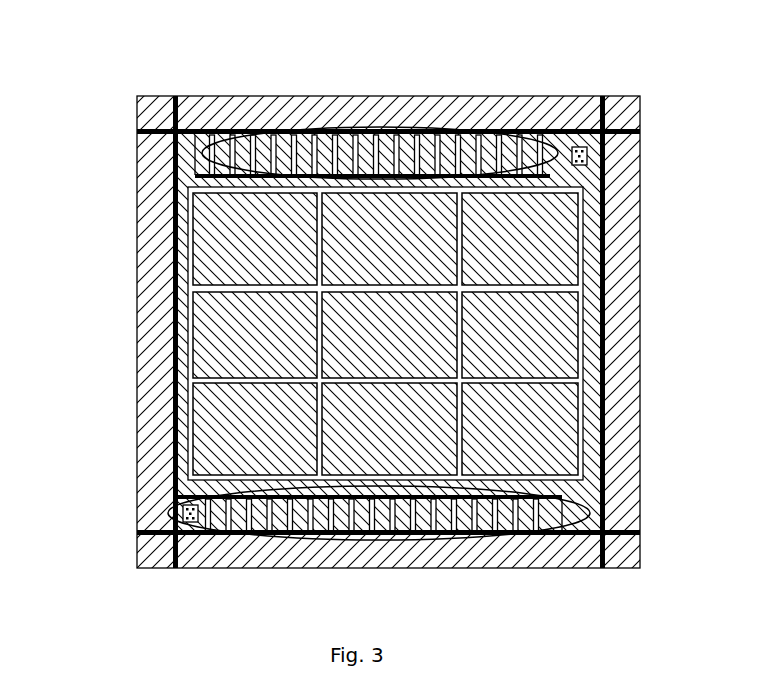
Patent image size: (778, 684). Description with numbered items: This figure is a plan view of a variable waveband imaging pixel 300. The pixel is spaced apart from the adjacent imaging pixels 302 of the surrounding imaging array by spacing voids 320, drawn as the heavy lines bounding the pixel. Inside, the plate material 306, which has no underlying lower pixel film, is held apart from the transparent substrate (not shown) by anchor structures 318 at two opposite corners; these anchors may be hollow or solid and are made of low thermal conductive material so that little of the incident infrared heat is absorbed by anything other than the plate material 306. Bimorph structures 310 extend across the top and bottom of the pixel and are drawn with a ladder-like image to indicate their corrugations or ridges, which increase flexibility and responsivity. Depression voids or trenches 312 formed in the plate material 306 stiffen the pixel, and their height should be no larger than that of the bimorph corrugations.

The variable waveband imaging pixel 300 is at (180, 484).
The adjacent imaging pixels 302 is at (140, 97).
The plate material 306 is at (228, 337).
The bimorph structures 310 is at (275, 128).
The depression voids or trenches 312 is at (462, 472).
The anchor structures 318 is at (573, 147).
The spacing voids 320 is at (122, 532).